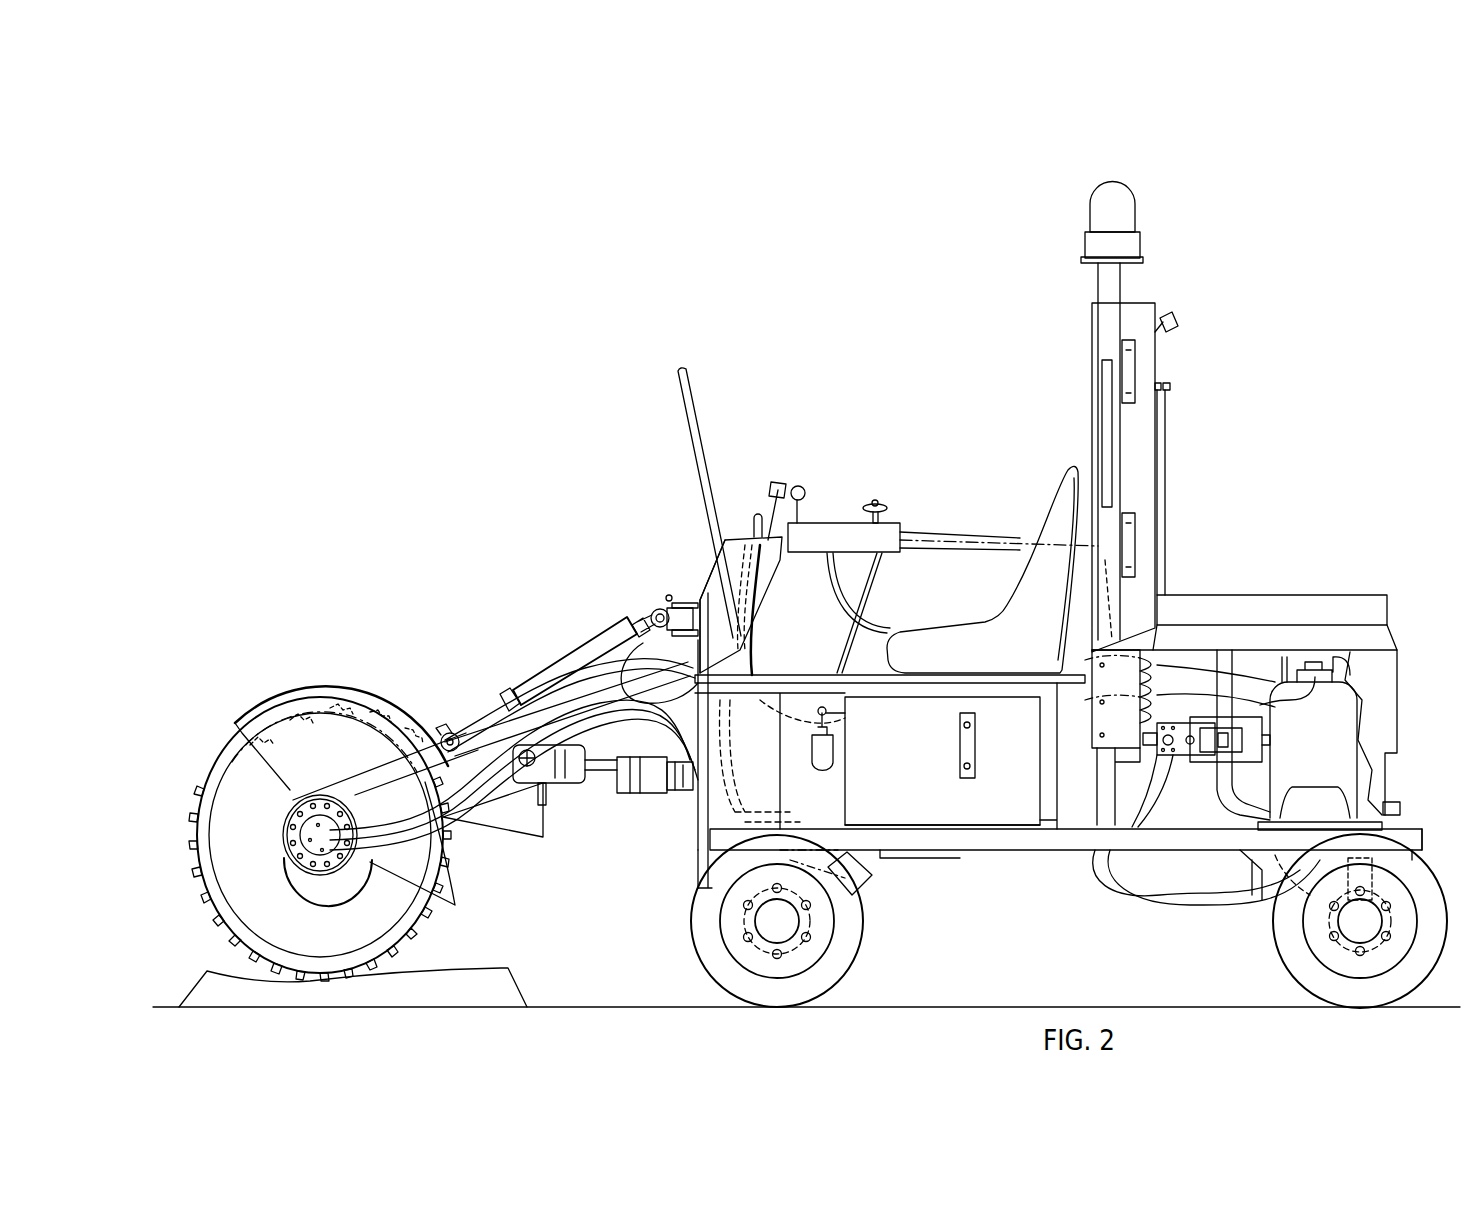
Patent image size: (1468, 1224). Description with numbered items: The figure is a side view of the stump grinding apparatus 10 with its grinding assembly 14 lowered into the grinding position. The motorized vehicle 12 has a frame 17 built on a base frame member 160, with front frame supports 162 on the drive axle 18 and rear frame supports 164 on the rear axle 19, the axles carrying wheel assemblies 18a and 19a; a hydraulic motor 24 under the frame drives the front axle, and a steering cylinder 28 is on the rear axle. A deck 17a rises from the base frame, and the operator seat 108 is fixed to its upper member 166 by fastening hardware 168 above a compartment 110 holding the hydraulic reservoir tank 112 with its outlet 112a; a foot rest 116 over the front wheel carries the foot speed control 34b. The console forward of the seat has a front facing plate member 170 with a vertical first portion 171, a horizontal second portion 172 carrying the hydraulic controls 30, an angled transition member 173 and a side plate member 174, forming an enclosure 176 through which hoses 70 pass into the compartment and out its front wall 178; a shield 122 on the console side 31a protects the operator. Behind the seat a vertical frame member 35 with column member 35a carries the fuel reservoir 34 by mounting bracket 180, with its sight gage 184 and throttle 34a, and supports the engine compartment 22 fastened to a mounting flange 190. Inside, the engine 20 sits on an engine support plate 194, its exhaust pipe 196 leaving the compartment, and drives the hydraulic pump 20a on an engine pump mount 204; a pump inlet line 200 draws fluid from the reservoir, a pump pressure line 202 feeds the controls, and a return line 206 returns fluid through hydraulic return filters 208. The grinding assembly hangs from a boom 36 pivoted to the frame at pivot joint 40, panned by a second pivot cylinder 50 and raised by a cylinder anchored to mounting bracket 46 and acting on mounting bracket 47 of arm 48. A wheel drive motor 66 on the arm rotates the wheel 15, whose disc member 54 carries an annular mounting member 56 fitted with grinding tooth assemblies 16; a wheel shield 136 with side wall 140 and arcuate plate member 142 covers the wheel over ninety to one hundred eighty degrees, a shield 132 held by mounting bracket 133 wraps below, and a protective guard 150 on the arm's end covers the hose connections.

The stump grinding apparatus 10 is at (557, 385).
The motorized vehicle 12 is at (945, 385).
The grinding assembly 14 is at (395, 625).
The wheel 15 is at (185, 880).
The grinding tooth assemblies 16 is at (262, 965).
The vehicle frame 17 is at (1000, 852).
The deck 17a is at (778, 678).
The wheel drive axle 18 is at (680, 955).
The wheel assemblies 18a is at (830, 975).
The rear wheel axle 19 is at (1275, 970).
The wheel assemblies 19a is at (1410, 965).
The engine 20 is at (1362, 682).
The hydraulic pump 20a is at (1183, 762).
The engine compartment 22 is at (1310, 605).
The hydraulic motor 24 is at (870, 882).
The steering cylinder 28 is at (1275, 905).
The hydraulic controls 30 is at (795, 475).
The console side 31a is at (625, 655).
The fuel reservoir 34 is at (1145, 303).
The throttle 34a is at (876, 505).
The foot speed control 34b is at (785, 770).
The vertical frame member 35 is at (1090, 290).
The column member 35a is at (1115, 465).
The support member or boom 36 is at (550, 745).
The pivot joint 40 is at (557, 650).
The mounting bracket 46 is at (672, 600).
The mounting bracket 47 is at (440, 725).
The arm 48 is at (375, 795).
The second pivot cylinder 50 is at (630, 810).
The disc member 54 is at (235, 800).
The annular mounting member 56 is at (200, 825).
The wheel drive motor 66 is at (290, 862).
The hoses 70 is at (420, 870).
The seat 108 is at (1057, 485).
The compartment 110 is at (850, 790).
The hydraulic reservoir tank 112 is at (1030, 832).
The reservoir outlet 112a is at (1025, 758).
The foot rest 116 is at (700, 835).
The shield 122 is at (690, 392).
The shield 132 is at (530, 840).
The mounting bracket 133 is at (555, 800).
The wheel shield 136 is at (318, 692).
The side wall 140 is at (245, 715).
The arcuate plate member 142 is at (390, 715).
The protective guard 150 is at (345, 880).
The base frame member 160 is at (940, 843).
The front frame supports 162 is at (698, 870).
The rear frame supports 164 is at (1405, 870).
The upper member 166 is at (855, 680).
The fastening hardware 168 is at (900, 673).
The front facing plate member 170 is at (728, 525).
The first portion 171 is at (655, 630).
The second portion 172 is at (742, 535).
The transition member 173 is at (700, 560).
The side plate member 174 is at (765, 575).
The enclosure 176 is at (760, 618).
The front wall 178 is at (690, 815).
The mounting bracket 180 is at (1135, 360).
The sight gage 184 is at (1170, 395).
The mounting flange 190 is at (1150, 860).
The engine support plate 194 is at (1250, 822).
The exhaust pipe 196 is at (1390, 800).
The pump inlet line 200 is at (1169, 738).
The pump pressure line 202 is at (1182, 640).
The engine pump mount 204 is at (1238, 705).
The return line 206 is at (770, 698).
The hydraulic return filters 208 is at (835, 742).